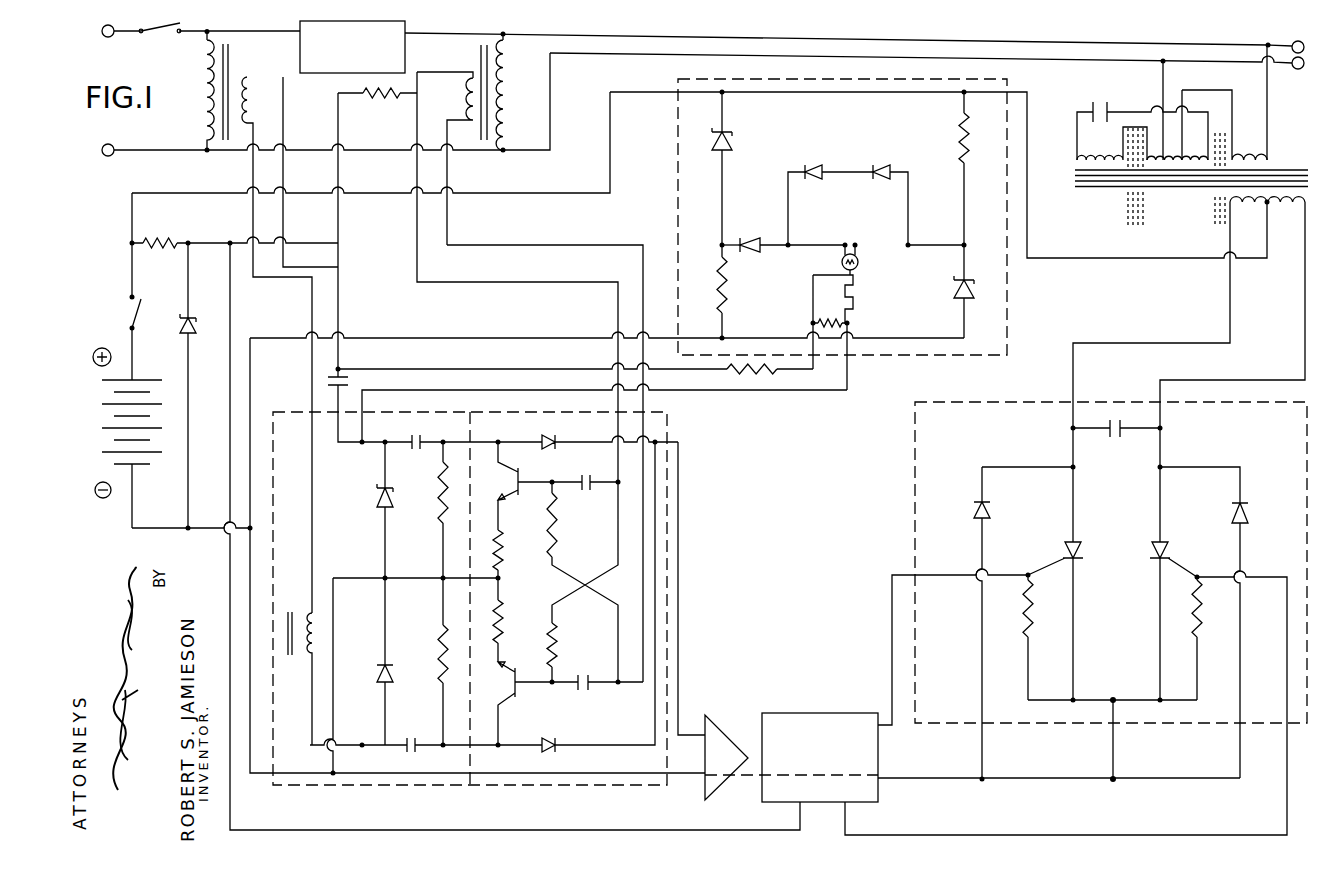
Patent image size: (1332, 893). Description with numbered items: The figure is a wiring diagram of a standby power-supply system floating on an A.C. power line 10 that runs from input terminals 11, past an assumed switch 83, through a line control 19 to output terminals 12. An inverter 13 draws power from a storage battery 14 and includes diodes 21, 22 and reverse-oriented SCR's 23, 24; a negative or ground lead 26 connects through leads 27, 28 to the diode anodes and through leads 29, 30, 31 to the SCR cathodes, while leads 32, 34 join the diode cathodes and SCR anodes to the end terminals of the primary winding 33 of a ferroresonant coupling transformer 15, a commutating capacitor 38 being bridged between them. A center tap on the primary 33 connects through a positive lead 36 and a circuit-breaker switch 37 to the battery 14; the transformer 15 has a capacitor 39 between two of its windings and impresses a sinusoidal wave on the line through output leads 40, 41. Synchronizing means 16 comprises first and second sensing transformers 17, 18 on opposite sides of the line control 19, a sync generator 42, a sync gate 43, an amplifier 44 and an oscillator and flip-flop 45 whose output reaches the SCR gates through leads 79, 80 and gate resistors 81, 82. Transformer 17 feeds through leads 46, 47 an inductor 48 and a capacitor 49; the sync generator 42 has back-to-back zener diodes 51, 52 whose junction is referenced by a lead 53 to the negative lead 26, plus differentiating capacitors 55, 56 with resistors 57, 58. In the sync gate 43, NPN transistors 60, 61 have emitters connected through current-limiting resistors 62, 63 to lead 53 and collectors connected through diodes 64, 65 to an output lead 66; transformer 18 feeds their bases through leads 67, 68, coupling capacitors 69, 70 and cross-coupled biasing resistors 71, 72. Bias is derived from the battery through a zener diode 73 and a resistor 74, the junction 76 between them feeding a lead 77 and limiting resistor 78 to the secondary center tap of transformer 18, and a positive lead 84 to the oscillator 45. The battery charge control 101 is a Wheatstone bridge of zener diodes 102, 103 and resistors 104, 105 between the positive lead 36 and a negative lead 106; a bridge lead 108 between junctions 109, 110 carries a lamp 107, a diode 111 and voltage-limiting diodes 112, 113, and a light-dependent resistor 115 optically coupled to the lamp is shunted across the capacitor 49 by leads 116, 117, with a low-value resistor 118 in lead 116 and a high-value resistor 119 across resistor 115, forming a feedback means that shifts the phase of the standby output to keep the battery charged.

The A.C. power line 10 is at (270, 33).
The input terminals 11 is at (112, 37).
The output terminals 12 is at (1300, 69).
The inverter 13 is at (907, 489).
The storage battery 14 is at (146, 380).
The coupling means 15 is at (1117, 204).
The synchronizing means 16 is at (723, 524).
The first sensing means 17 is at (203, 122).
The second sensing means 18 is at (508, 102).
The line control means 19 is at (330, 75).
The diode 21 is at (992, 512).
The diode 22 is at (1250, 514).
The first SCR 23 is at (1084, 548).
The second SCR 24 is at (1172, 550).
The negative or ground lead 26 is at (120, 528).
The lead 27 is at (984, 660).
The lead 28 is at (1243, 668).
The lead 29 is at (1115, 762).
The lead 30 is at (1076, 652).
The lead 31 is at (1157, 627).
The lead 32 is at (1226, 302).
The primary winding 33 is at (1287, 215).
The lead 34 is at (1298, 306).
The positive lead 36 is at (130, 272).
The switch 37 is at (140, 305).
The commutating capacitor 38 is at (1125, 434).
The capacitor 39 is at (1108, 106).
The output lead 40 is at (1166, 82).
The output lead 41 is at (1269, 126).
The sync generator 42 is at (297, 409).
The sync gate 43 is at (678, 424).
The amplifier 44 is at (714, 722).
The oscillator and flip-flop 45 is at (826, 708).
The lead 46 is at (280, 278).
The lead 47 is at (340, 282).
The inductor 48 is at (301, 658).
The capacitor 49 is at (350, 376).
The zener diode 51 is at (394, 500).
The zener diode 52 is at (396, 668).
The reference or ground lead 53 is at (322, 624).
The capacitor 55 is at (425, 440).
The capacitor 56 is at (407, 752).
The resistor 57 is at (440, 526).
The resistor 58 is at (438, 632).
The first NPN transistor 60 is at (502, 489).
The second NPN transistor 61 is at (503, 692).
The current-limiting resistor 62 is at (494, 546).
The current-limiting resistor 63 is at (504, 606).
The diode 64 is at (558, 436).
The diode 65 is at (556, 739).
The output lead 66 is at (684, 642).
The lead 67 is at (414, 242).
The lead 68 is at (520, 245).
The coupling capacitor 69 is at (592, 490).
The coupling capacitor 70 is at (590, 674).
The biasing resistor 71 is at (558, 546).
The biasing resistor 72 is at (558, 625).
The zener diode 73 is at (199, 322).
The resistor 74 is at (160, 236).
The junction 76 is at (190, 248).
The lead 77 is at (340, 176).
The limiting resistor 78 is at (388, 100).
The lead 79 is at (890, 613).
The lead 80 is at (1172, 834).
The resistor 81 is at (1034, 596).
The resistor 82 is at (1203, 622).
The switch 83 is at (166, 33).
The positive lead 84 is at (685, 830).
The battery charge-control circuit 101 is at (904, 366).
The zener diode 102 is at (733, 140).
The zener diode 103 is at (952, 292).
The resistor 104 is at (960, 130).
The resistor 105 is at (728, 295).
The negative lead 106 is at (480, 337).
The lamp 107 is at (860, 265).
The bridge lead 108 is at (812, 240).
The bridge junction 109 is at (956, 244).
The bridge junction 110 is at (720, 242).
The diode 111 is at (750, 252).
The diode 112 is at (890, 152).
The diode 113 is at (812, 164).
The light-dependent variable resistor 115 is at (855, 314).
The lead 116 is at (515, 368).
The lead 117 is at (538, 390).
The low-value resistor 118 is at (772, 372).
The high-value resistor 119 is at (814, 322).